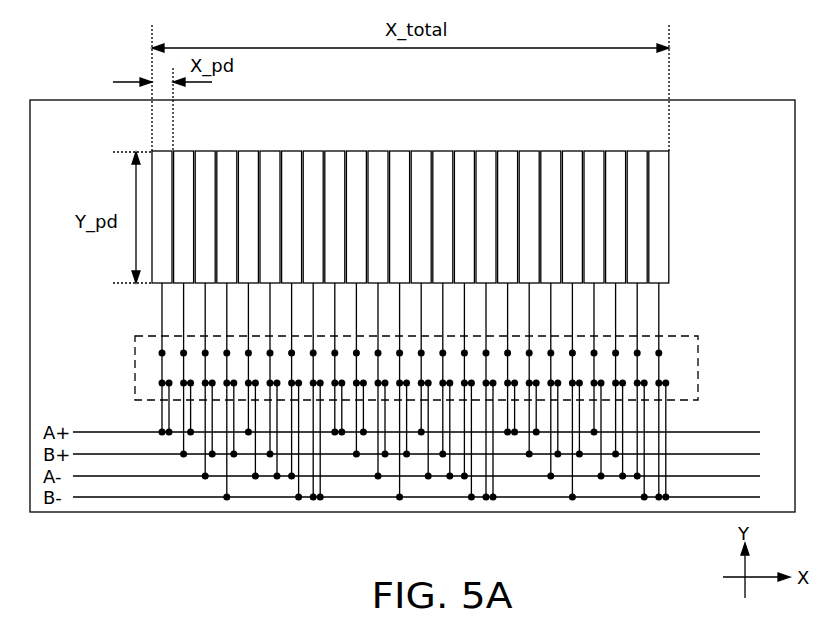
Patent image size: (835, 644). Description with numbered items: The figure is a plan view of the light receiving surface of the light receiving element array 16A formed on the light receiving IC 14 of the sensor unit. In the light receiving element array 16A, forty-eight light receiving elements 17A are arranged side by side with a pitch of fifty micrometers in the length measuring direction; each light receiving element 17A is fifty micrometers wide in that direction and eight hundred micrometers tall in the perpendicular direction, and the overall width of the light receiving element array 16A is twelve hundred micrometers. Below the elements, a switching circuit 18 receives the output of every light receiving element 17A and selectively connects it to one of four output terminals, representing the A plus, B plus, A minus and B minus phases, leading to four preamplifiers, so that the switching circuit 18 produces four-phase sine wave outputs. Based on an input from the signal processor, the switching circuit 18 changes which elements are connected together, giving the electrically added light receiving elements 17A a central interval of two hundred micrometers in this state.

The light receiving IC 14 is at (742, 100).
The light receiving element array 16A is at (669, 178).
The light receiving element 17A is at (655, 258).
The switching circuit 18 is at (698, 345).